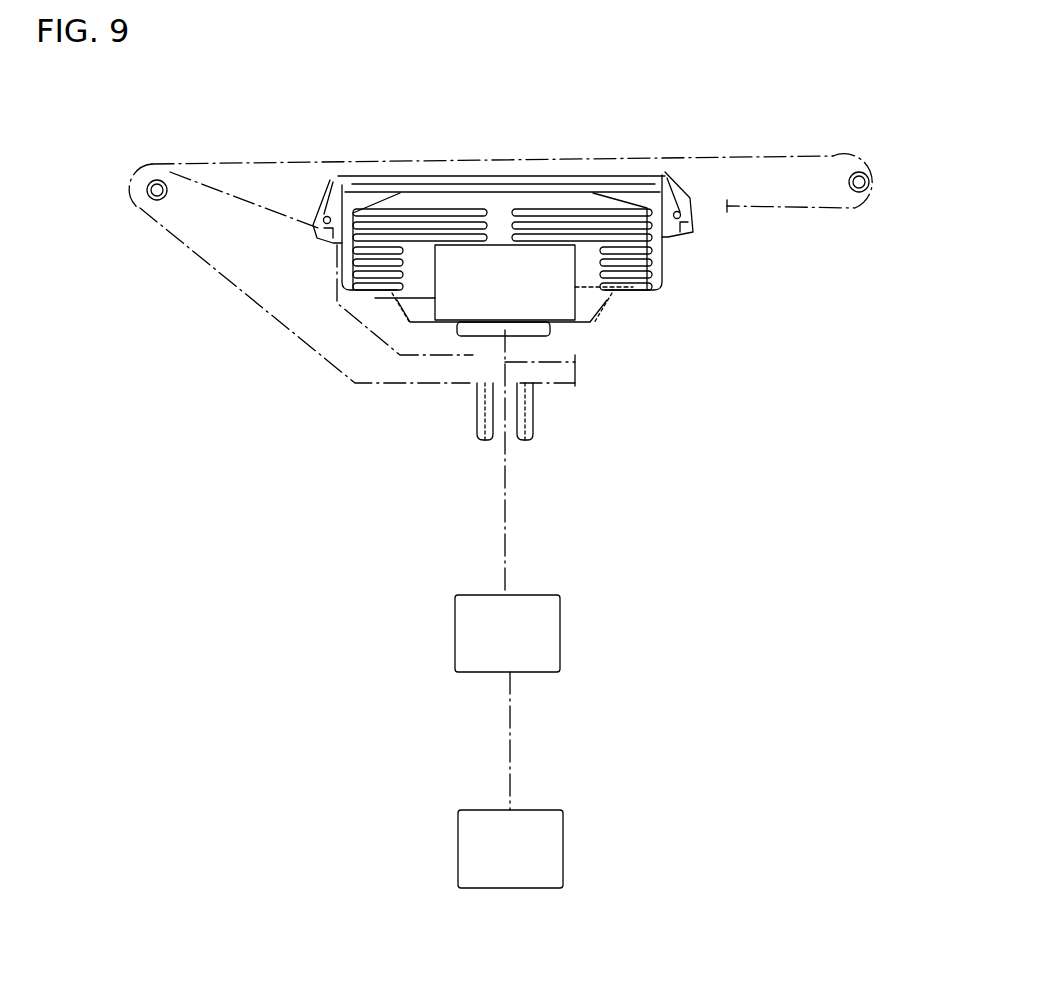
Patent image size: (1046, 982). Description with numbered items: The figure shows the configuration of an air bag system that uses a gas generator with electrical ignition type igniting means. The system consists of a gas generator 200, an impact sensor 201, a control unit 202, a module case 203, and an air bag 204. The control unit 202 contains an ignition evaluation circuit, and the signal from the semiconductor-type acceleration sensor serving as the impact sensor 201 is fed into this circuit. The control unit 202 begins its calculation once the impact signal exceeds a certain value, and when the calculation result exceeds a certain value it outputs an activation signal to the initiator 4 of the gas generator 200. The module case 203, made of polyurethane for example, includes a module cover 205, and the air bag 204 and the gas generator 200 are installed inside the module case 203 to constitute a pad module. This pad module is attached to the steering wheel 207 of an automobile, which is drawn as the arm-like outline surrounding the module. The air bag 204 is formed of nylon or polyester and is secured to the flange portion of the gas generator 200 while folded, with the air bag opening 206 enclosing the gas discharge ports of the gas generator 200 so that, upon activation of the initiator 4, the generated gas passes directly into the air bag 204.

The gas generator 200 is at (435, 305).
The initiator 4 is at (490, 337).
The impact sensor 201 is at (458, 850).
The control unit 202 is at (455, 630).
The module case 203 is at (640, 172).
The air bag 204 is at (384, 190).
The module cover 205 is at (497, 178).
The air bag opening 206 is at (655, 258).
The steering wheel 207 is at (753, 152).